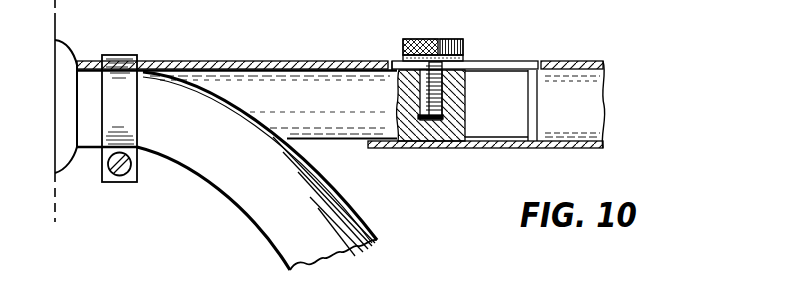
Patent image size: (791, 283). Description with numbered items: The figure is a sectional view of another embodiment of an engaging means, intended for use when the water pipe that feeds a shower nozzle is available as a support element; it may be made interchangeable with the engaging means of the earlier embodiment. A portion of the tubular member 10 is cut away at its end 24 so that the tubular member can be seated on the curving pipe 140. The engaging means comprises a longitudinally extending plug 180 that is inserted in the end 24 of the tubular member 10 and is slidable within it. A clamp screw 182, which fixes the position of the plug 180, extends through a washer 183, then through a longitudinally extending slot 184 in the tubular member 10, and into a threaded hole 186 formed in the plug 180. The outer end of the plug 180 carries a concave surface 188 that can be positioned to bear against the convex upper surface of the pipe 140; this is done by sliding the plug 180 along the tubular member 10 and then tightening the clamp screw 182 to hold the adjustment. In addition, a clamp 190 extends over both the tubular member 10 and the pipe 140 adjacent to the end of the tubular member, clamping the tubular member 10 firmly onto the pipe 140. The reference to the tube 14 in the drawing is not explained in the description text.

The tubular member 10 is at (579, 149).
The outer tube 14 is at (593, 61).
The end 24 is at (77, 63).
The curving pipe 140 is at (237, 197).
The plug 180 is at (337, 128).
The clamp screw 182 is at (463, 43).
The washer 183 is at (463, 56).
The slot 184 is at (392, 62).
The threaded hole 186 is at (421, 120).
The concave surface 188 is at (161, 66).
The clamp 190 is at (112, 182).